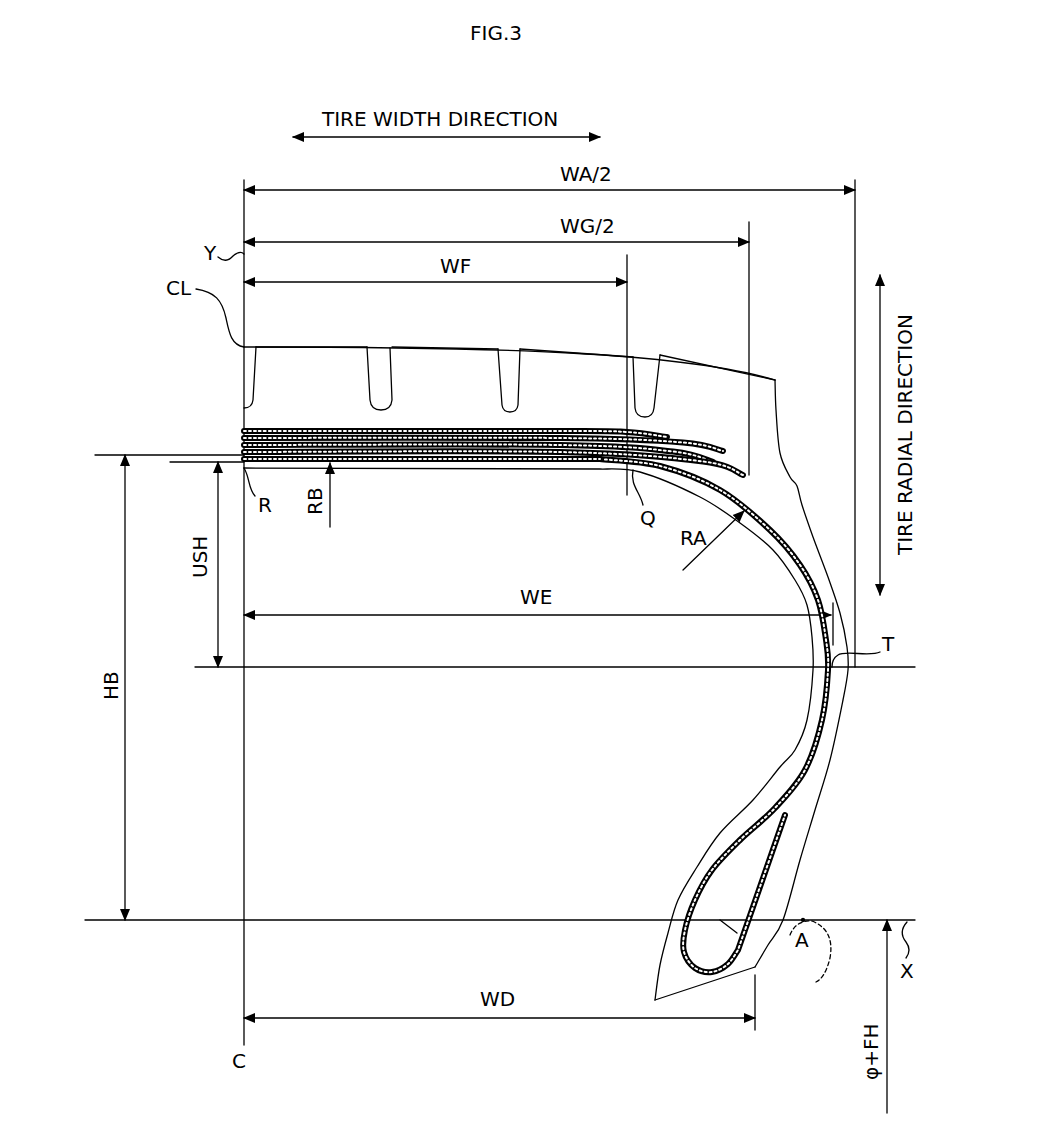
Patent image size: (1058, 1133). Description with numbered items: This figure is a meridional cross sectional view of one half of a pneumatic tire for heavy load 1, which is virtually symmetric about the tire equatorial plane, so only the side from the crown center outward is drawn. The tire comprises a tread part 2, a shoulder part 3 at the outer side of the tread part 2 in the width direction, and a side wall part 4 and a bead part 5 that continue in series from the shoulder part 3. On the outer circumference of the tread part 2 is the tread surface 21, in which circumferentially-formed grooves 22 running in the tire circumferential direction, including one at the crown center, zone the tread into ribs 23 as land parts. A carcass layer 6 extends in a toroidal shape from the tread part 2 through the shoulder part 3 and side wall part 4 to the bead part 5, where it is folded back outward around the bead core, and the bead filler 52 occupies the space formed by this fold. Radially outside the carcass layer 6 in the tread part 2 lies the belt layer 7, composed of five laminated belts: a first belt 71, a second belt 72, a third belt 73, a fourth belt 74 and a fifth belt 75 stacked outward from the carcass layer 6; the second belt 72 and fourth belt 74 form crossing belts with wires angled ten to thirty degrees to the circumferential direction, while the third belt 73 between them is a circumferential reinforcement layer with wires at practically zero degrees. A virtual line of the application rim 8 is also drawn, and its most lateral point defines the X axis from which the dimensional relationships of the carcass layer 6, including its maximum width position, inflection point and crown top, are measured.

The pneumatic tire for heavy load 1 is at (777, 342).
The tread part 2 is at (619, 370).
The shoulder part 3 is at (757, 388).
The side wall part 4 is at (840, 687).
The bead part 5 is at (780, 892).
The carcass layer 6 is at (780, 547).
The belt layer 7 is at (180, 330).
The application rim 8 is at (816, 982).
The tread surface 21 is at (560, 347).
The circumferentially-formed groove 22 is at (251, 345).
The rib 23 is at (312, 345).
The bead filler 52 is at (720, 872).
The first belt 71 is at (244, 459).
The second belt 72 is at (244, 452).
The third belt 73 is at (244, 445).
The fourth belt 74 is at (244, 438).
The fifth belt 75 is at (244, 430).